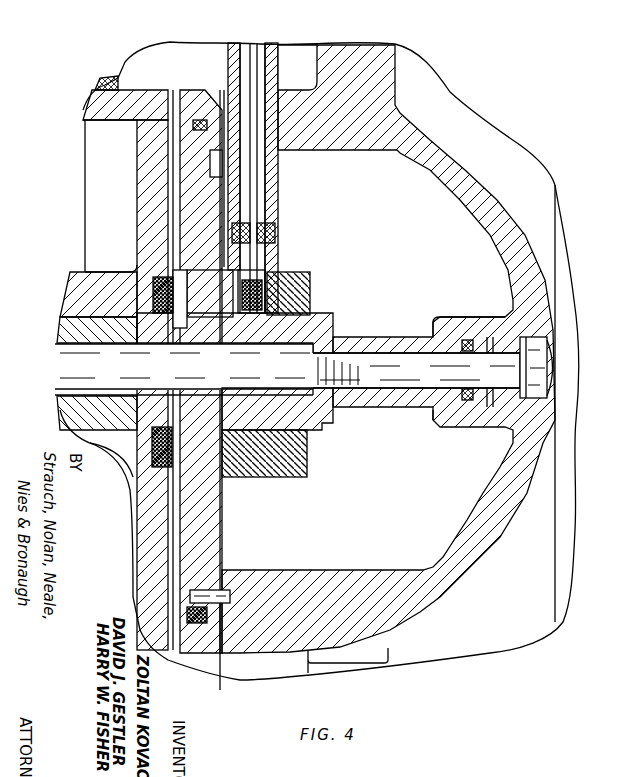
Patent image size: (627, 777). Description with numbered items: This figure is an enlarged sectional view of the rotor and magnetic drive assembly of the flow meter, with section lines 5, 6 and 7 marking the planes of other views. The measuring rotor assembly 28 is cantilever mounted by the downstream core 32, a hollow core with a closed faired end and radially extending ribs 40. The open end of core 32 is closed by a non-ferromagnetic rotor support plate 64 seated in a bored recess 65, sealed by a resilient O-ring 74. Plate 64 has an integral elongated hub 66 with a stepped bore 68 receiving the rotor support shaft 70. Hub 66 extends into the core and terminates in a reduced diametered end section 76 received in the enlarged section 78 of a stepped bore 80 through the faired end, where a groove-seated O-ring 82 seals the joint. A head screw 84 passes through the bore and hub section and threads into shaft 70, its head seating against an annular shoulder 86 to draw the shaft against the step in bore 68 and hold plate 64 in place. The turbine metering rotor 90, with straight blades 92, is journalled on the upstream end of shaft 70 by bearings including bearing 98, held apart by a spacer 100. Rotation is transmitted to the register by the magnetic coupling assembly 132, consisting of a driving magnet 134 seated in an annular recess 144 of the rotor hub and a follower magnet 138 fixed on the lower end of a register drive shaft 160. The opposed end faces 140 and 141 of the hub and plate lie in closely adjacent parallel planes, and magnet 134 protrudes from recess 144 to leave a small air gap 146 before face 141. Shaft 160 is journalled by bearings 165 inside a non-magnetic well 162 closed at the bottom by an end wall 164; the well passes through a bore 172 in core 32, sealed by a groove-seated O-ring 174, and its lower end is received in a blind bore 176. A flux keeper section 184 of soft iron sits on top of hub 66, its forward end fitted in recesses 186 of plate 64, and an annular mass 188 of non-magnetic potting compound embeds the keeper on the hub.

The section line 5- 5 is at (226, 66).
The section line 6- 6 is at (117, 300).
The section line 7- 7 is at (237, 215).
The measuring rotor assembly 28 is at (222, 557).
The downstream core 32 is at (190, 97).
The radially extending ribs 40 is at (397, 80).
The rotor support plate 64 is at (173, 206).
The bored recess 65 is at (180, 140).
The elongated hub 66 is at (323, 434).
The stepped bore 68 is at (287, 347).
The rotor support shaft 70 is at (149, 376).
The resilient O-ring 74 is at (224, 606).
The reduced diametered end section 76 is at (386, 397).
The enlarged section 78 is at (435, 340).
The stepped bore 80 is at (545, 343).
The groove-seated O-ring 82 is at (465, 405).
The head screw 84 is at (385, 362).
The annular shoulder 86 is at (533, 352).
The turbine metering rotor 90 is at (139, 576).
The straight blades 92 is at (107, 82).
The bearing 98 is at (77, 413).
The spacer 100 is at (67, 312).
The magnetic coupling assembly 132 is at (148, 460).
The driving magnet 134 is at (163, 278).
The follower magnet 138 is at (300, 290).
The end face of hub 140 is at (137, 122).
The end face of support plate 141 is at (173, 541).
The annular recess 144 is at (180, 525).
The air gap 146 is at (180, 300).
The register drive shaft 160 is at (258, 163).
The well 162 is at (275, 184).
The end wall 164 is at (236, 345).
The bearings 165 is at (268, 230).
The bore 172 is at (265, 88).
The groove-seated O-ring 174 is at (273, 120).
The blind bore 176 is at (252, 282).
The flux keeper section 184 is at (197, 302).
The recesses 186 is at (197, 316).
The annular mass of potting compound 188 is at (306, 470).